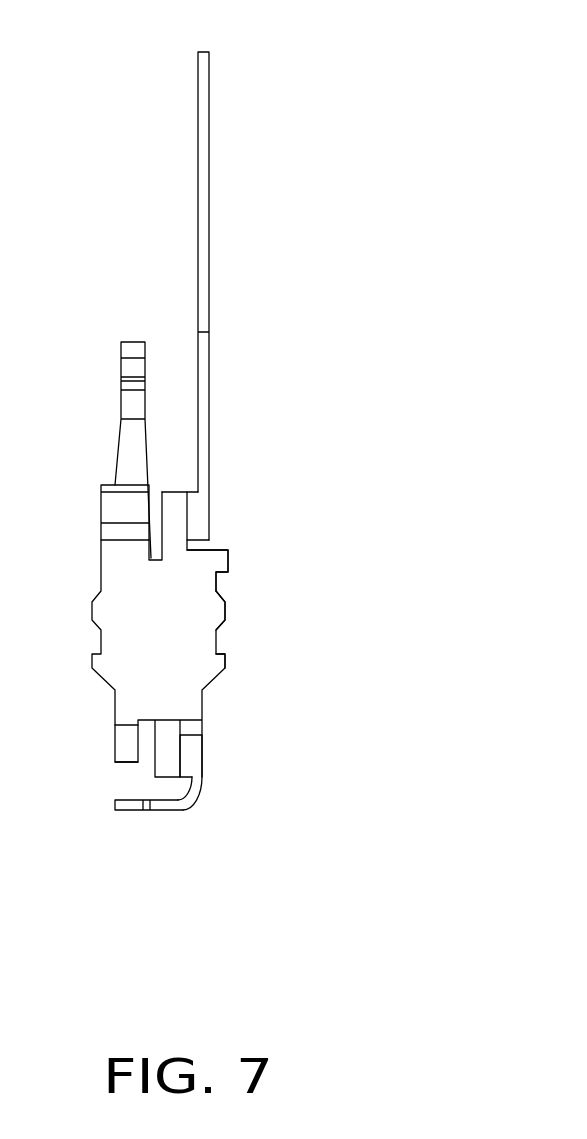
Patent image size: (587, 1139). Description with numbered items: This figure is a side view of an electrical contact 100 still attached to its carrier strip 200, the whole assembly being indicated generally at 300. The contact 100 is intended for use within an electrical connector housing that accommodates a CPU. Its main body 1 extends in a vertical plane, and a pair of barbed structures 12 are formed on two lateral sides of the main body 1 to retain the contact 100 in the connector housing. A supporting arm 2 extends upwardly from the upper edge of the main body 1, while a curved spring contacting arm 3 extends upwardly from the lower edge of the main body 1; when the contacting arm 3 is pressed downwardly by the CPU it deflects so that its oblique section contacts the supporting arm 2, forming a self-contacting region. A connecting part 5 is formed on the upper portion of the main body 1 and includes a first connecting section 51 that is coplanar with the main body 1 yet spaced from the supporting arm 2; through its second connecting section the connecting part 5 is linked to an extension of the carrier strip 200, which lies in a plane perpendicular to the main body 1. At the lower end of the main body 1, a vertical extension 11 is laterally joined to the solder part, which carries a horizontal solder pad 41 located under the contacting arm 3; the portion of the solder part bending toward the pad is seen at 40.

The electrical connector assembly 300 is at (165, 65).
The carrier strip 200 is at (205, 355).
The contacting arm 3 is at (130, 367).
The supporting arm 2 is at (117, 508).
The connecting part 5 is at (198, 510).
The first connecting section 51 is at (175, 515).
The main body 1 is at (133, 630).
The electrical contact 100 is at (175, 605).
The barbed structures 12 is at (223, 660).
The vertical extension 11 is at (165, 758).
The bent tab 40 is at (195, 750).
The horizontal solder pad 41 is at (160, 805).